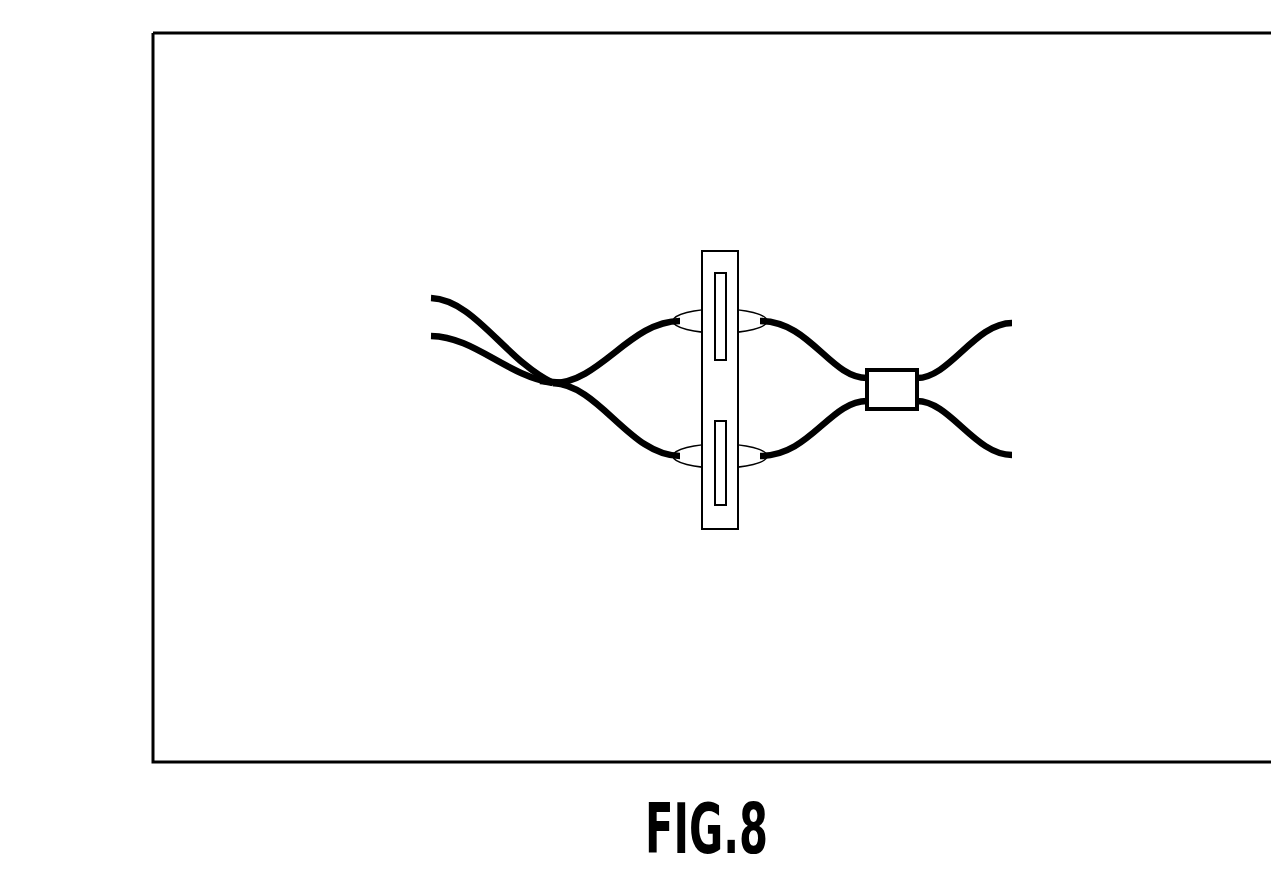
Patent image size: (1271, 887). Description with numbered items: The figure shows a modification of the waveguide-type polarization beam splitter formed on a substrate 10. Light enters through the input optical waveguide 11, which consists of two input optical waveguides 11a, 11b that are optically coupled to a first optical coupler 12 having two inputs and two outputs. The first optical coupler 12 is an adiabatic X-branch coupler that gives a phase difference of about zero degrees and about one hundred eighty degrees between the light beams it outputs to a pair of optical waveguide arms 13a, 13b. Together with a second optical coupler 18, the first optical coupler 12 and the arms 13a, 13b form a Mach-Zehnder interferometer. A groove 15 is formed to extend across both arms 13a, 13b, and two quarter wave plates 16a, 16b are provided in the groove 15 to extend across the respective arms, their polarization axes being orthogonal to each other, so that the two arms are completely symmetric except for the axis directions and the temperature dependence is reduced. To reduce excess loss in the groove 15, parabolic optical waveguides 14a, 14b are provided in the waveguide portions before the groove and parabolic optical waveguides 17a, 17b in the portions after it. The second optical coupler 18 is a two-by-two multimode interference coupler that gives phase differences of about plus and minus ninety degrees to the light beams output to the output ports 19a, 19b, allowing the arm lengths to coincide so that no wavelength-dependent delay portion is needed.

The substrate 10 is at (202, 763).
The input optical waveguide 11 is at (377, 322).
The input optical waveguide 11a is at (439, 340).
The input optical waveguide 11b is at (466, 354).
The first optical coupler 12 is at (553, 386).
The optical waveguide arm 13a is at (600, 362).
The optical waveguide arm 13b is at (626, 432).
The parabolic optical waveguide 14a is at (680, 317).
The parabolic optical waveguide 14b is at (690, 457).
The groove 15 is at (718, 528).
The quarter wave plate 16a is at (720, 280).
The quarter wave plate 16b is at (722, 505).
The parabolic optical waveguide 17a is at (740, 318).
The parabolic optical waveguide 17b is at (750, 460).
The second optical coupler 18 is at (892, 410).
The output port 19a is at (1080, 345).
The output port 19b is at (992, 434).